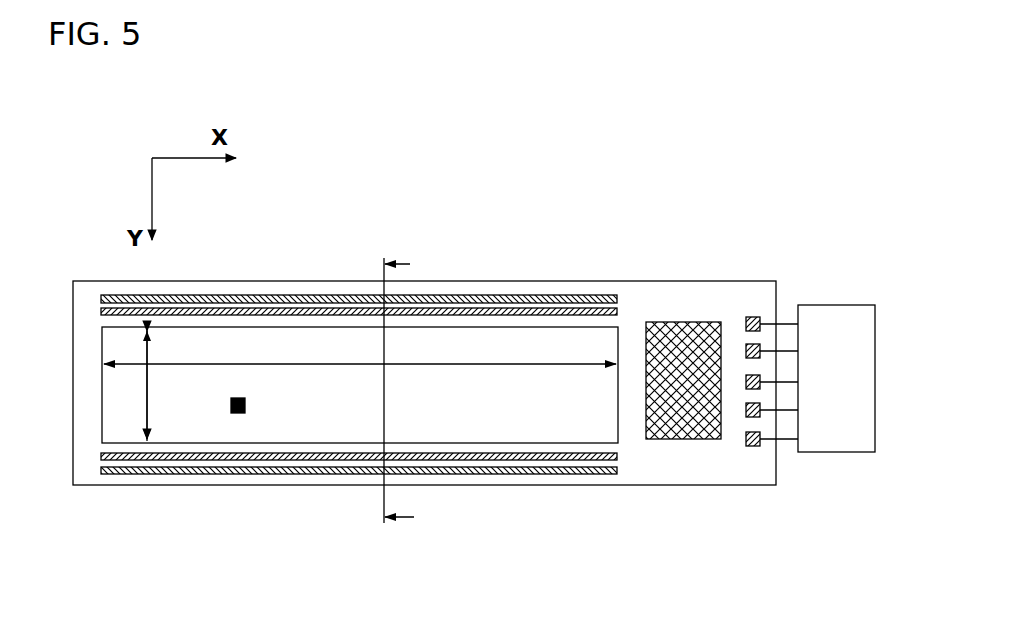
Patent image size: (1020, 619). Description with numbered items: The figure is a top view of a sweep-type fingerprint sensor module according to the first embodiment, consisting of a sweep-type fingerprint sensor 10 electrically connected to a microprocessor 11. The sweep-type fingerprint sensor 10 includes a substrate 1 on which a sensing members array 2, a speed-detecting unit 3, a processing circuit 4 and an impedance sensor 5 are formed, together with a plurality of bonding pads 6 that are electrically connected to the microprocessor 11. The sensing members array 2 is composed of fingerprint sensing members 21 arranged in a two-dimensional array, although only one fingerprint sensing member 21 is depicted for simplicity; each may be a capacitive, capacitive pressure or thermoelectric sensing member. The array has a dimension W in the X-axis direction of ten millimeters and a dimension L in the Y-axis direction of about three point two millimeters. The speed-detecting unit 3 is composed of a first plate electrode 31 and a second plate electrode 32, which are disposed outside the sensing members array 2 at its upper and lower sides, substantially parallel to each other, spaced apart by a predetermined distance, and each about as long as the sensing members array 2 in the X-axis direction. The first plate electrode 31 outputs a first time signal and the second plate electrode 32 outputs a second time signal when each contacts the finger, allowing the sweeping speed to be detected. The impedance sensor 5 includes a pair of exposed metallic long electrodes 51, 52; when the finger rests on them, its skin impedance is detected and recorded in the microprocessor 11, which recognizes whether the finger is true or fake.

The sweep-type fingerprint sensor 10 is at (546, 262).
The substrate 1 is at (746, 281).
The sensing members array 2 is at (618, 334).
The speed-detecting unit 3 is at (352, 186).
The first plate electrode 31 is at (101, 312).
The second plate electrode 32 is at (101, 456).
The impedance sensor 5 is at (496, 186).
The electrode 51 is at (101, 299).
The electrode 52 is at (101, 470).
The fingerprint sensing member 21 is at (237, 413).
The processing circuit 4 is at (680, 433).
The bonding pads 6 is at (755, 317).
The microprocessor 11 is at (836, 306).